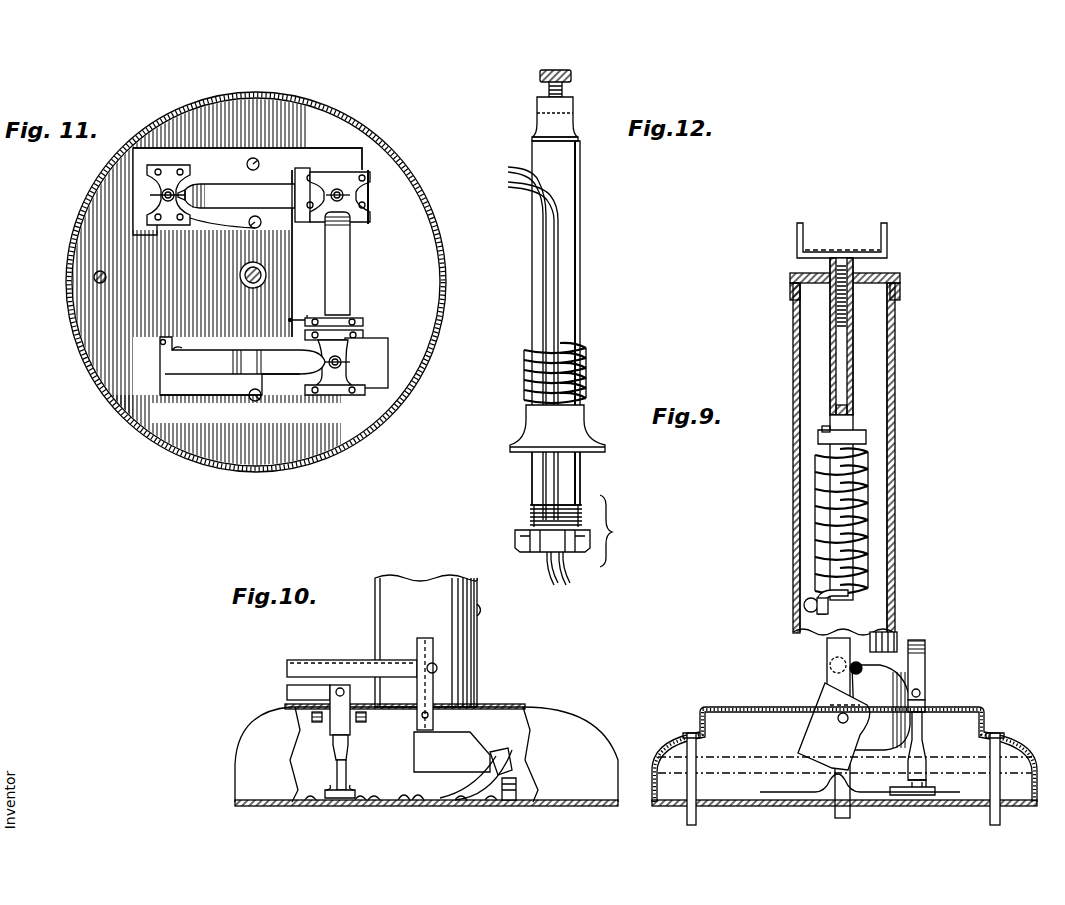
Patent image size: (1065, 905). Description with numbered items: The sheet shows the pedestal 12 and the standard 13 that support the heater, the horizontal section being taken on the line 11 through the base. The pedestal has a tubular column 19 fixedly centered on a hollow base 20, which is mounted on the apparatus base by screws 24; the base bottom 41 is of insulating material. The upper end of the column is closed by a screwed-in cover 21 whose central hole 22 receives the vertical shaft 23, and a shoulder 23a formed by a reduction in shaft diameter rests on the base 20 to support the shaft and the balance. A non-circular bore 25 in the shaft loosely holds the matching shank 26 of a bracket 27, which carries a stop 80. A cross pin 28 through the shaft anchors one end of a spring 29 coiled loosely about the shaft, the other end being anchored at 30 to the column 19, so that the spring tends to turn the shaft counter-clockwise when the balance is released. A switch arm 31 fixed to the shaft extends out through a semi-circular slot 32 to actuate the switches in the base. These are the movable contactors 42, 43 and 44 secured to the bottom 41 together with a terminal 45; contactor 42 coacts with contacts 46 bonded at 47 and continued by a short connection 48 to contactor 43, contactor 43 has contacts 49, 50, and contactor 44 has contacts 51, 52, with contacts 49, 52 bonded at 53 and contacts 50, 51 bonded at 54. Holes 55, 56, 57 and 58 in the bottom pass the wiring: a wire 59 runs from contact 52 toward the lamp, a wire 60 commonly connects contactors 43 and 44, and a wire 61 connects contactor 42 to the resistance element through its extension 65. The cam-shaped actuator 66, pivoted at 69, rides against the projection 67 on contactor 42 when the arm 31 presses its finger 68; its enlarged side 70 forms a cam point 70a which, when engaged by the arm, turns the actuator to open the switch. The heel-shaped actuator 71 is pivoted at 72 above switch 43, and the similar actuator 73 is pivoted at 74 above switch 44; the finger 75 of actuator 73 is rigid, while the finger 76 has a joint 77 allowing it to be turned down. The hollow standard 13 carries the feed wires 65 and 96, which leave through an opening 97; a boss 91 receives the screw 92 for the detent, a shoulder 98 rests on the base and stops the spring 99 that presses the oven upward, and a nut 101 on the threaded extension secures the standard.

In FIG. 9, the section line 11 is at (1010, 770).
In FIG. 10, the section line 11 is at (636, 730).
In FIG. 9, the pedestal 12 is at (790, 467).
In FIG. 10, the pedestal 12 is at (481, 581).
In FIG. 12, the standard 13 is at (568, 218).
In FIG. 9, the tubular column 19 is at (795, 489).
In FIG. 10, the tubular column 19 is at (479, 595).
In FIG. 11, the hollow base 20 is at (70, 294).
In FIG. 9, the hollow base 20 is at (772, 710).
In FIG. 10, the hollow base 20 is at (578, 708).
In FIG. 9, the cover 21 is at (792, 280).
In FIG. 9, the central hole 22 is at (832, 272).
In FIG. 11, the vertical shaft 23 is at (240, 275).
In FIG. 9, the vertical shaft 23 is at (825, 367).
In FIG. 9, the shoulder 23a is at (830, 645).
In FIG. 9, the screws 24 is at (686, 816).
In FIG. 9, the non-circular bore 25 is at (834, 324).
In FIG. 9, the shank 26 is at (840, 346).
In FIG. 9, the bracket 27 is at (795, 226).
In FIG. 9, the cross pin 28 is at (820, 438).
In FIG. 9, the spring 29 is at (836, 510).
In FIG. 9, the anchorage 30 is at (806, 600).
In FIG. 10, the anchorage 30 is at (482, 609).
In FIG. 9, the switch arm 31 is at (884, 650).
In FIG. 10, the switch arm 31 is at (290, 662).
In FIG. 9, the semi-circular slot 32 is at (880, 640).
In FIG. 10, the semi-circular slot 32 is at (438, 666).
In FIG. 11, the bottom 41 is at (84, 278).
In FIG. 9, the bottom 41 is at (755, 800).
In FIG. 10, the bottom 41 is at (290, 800).
In FIG. 11, the contactor 42 is at (206, 372).
In FIG. 9, the contactor 42 is at (782, 800).
In FIG. 11, the contactor 43 is at (333, 262).
In FIG. 10, the contactor 43 is at (336, 762).
In FIG. 11, the contactor 44 is at (273, 188).
In FIG. 10, the contactor 44 is at (462, 799).
In FIG. 11, the terminal 45 is at (350, 318).
In FIG. 11, the coacting contacts 46 is at (362, 372).
In FIG. 9, the coacting contacts 46 is at (918, 796).
In FIG. 11, the bond 47 is at (372, 390).
In FIG. 11, the short connection 48 is at (352, 327).
In FIG. 11, the contact 49 is at (358, 199).
In FIG. 10, the contact 49 is at (326, 791).
In FIG. 11, the contact 50 is at (328, 182).
In FIG. 10, the contact 50 is at (345, 805).
In FIG. 11, the contact 51 is at (168, 170).
In FIG. 10, the contact 51 is at (508, 801).
In FIG. 11, the contact 52 is at (167, 227).
In FIG. 11, the bond 53 is at (192, 182).
In FIG. 11, the bond 54 is at (222, 160).
In FIG. 11, the hole 55 is at (258, 160).
In FIG. 11, the hole 56 is at (254, 227).
In FIG. 11, the hole 57 is at (262, 340).
In FIG. 11, the hole 58 is at (258, 400).
In FIG. 11, the wire 59 is at (220, 224).
In FIG. 11, the wire 60 is at (278, 253).
In FIG. 11, the wire 61 is at (234, 396).
In FIG. 12, the extension wire 65 is at (560, 560).
In FIG. 9, the actuator 66 is at (820, 746).
In FIG. 9, the projection 67 is at (815, 800).
In FIG. 9, the finger 68 is at (826, 635).
In FIG. 9, the pivot 69 is at (840, 700).
In FIG. 9, the enlarged side 70 is at (905, 745).
In FIG. 9, the cam point 70a is at (925, 688).
In FIG. 9, the actuator 71 is at (923, 740).
In FIG. 10, the actuator 71 is at (322, 740).
In FIG. 9, the pivot 72 is at (943, 695).
In FIG. 10, the pivot 72 is at (312, 716).
In FIG. 10, the actuator 73 is at (442, 742).
In FIG. 10, the pivot 74 is at (479, 682).
In FIG. 10, the finger 75 is at (431, 645).
In FIG. 9, the finger 76 is at (905, 672).
In FIG. 10, the finger 76 is at (290, 686).
In FIG. 9, the joint 77 is at (926, 695).
In FIG. 10, the joint 77 is at (330, 692).
In FIG. 9, the stop 80 is at (805, 250).
In FIG. 12, the boss 91 is at (565, 122).
In FIG. 12, the screw 92 is at (578, 82).
In FIG. 12, the wire 96 is at (565, 566).
In FIG. 12, the opening 97 is at (552, 185).
In FIG. 12, the shoulder 98 is at (580, 418).
In FIG. 12, the spring 99 is at (582, 360).
In FIG. 12, the nut 101 is at (608, 537).